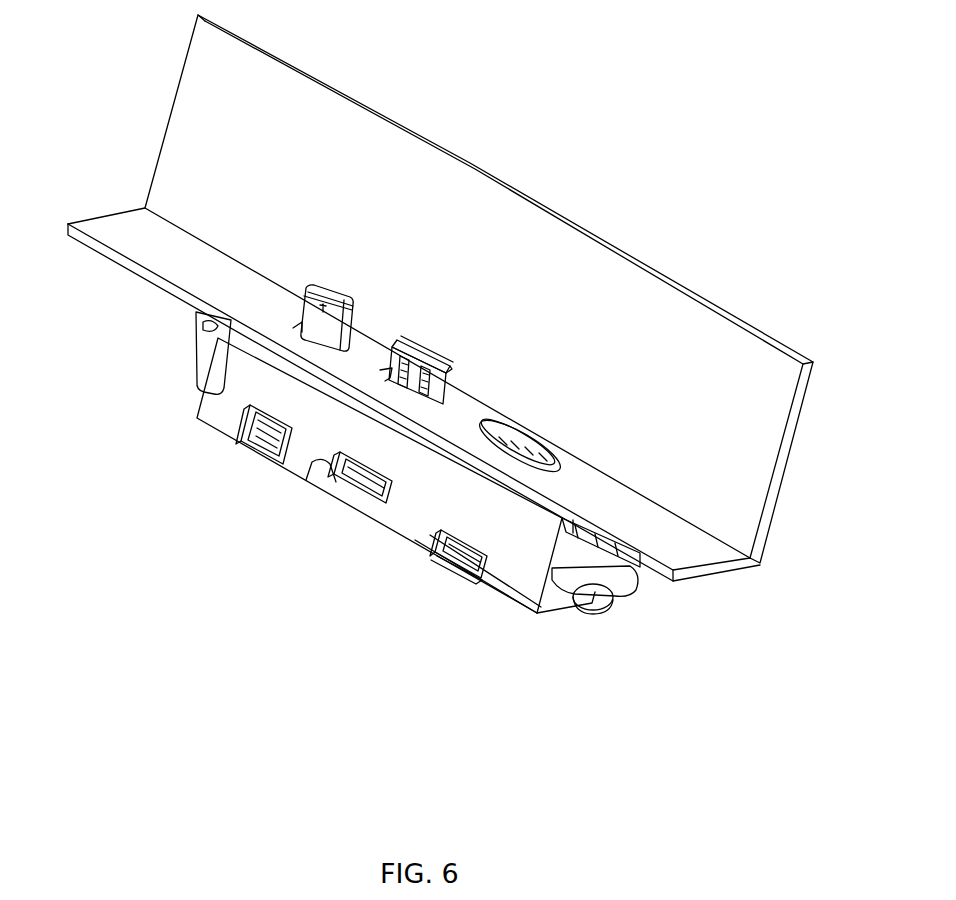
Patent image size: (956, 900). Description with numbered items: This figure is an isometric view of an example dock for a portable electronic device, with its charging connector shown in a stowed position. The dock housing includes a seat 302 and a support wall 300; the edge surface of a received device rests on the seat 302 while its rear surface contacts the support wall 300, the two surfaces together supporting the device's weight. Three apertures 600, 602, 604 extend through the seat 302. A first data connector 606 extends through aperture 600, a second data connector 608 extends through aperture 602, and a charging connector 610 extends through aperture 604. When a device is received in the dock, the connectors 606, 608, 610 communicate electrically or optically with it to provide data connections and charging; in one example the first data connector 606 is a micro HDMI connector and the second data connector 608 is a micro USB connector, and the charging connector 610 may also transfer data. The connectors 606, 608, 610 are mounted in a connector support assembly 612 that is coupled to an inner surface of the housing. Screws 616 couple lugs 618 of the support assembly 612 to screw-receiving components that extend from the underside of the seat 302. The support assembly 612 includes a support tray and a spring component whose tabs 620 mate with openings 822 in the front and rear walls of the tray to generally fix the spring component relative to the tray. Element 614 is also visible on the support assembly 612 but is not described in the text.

The support wall 300 is at (212, 70).
The seat 302 is at (124, 231).
The aperture 600 is at (354, 323).
The aperture 602 is at (458, 386).
The aperture 604 is at (564, 462).
The first data connector 606 is at (305, 331).
The second data connector 608 is at (401, 391).
The charging connector 610 is at (501, 449).
The connector support assembly 612 is at (431, 530).
The flange 614 is at (517, 572).
The screw 616 is at (600, 610).
The lug 618 is at (624, 572).
The tab 620 is at (455, 565).
The opening 822 is at (448, 556).